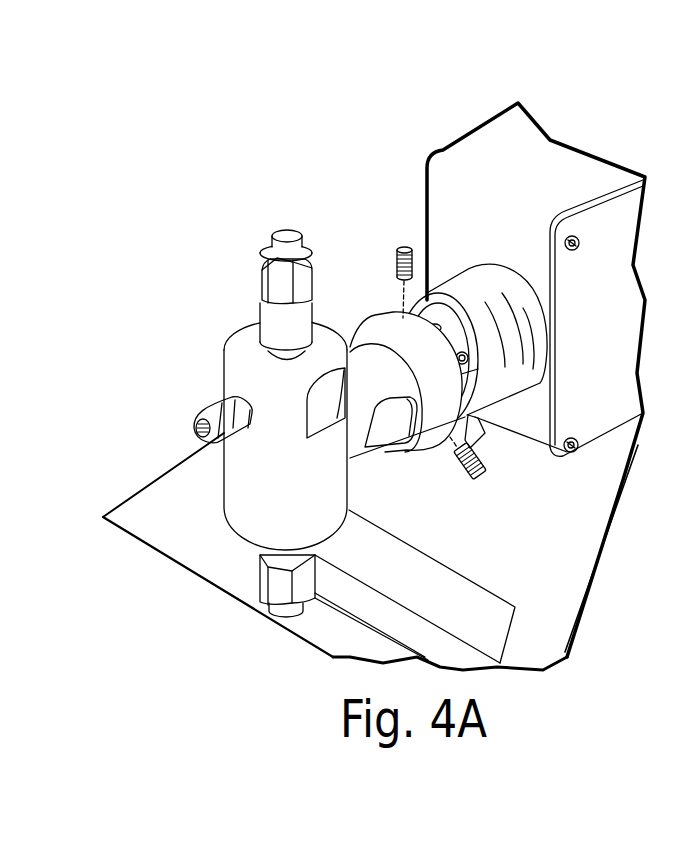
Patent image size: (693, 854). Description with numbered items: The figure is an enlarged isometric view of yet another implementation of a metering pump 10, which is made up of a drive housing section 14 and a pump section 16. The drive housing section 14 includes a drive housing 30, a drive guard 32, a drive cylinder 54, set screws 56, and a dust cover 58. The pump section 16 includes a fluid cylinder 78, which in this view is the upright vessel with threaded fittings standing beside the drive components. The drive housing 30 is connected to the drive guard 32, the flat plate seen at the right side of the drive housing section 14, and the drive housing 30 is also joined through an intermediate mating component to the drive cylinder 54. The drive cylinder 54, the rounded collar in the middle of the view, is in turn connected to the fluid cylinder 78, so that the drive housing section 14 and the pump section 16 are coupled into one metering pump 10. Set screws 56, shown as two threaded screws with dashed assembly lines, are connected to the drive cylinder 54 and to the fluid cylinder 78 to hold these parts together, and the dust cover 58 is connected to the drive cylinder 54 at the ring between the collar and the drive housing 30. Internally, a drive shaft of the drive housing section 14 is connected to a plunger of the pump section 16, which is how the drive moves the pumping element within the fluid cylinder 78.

The metering pump 10 is at (250, 148).
The drive housing section 14 is at (557, 85).
The pump section 16 is at (331, 145).
The drive housing 30 is at (452, 152).
The drive guard 32 is at (615, 228).
The drive cylinder 54 is at (442, 405).
The set screws 56 is at (383, 245).
The dust cover 58 is at (440, 275).
The fluid cylinder 78 is at (368, 360).